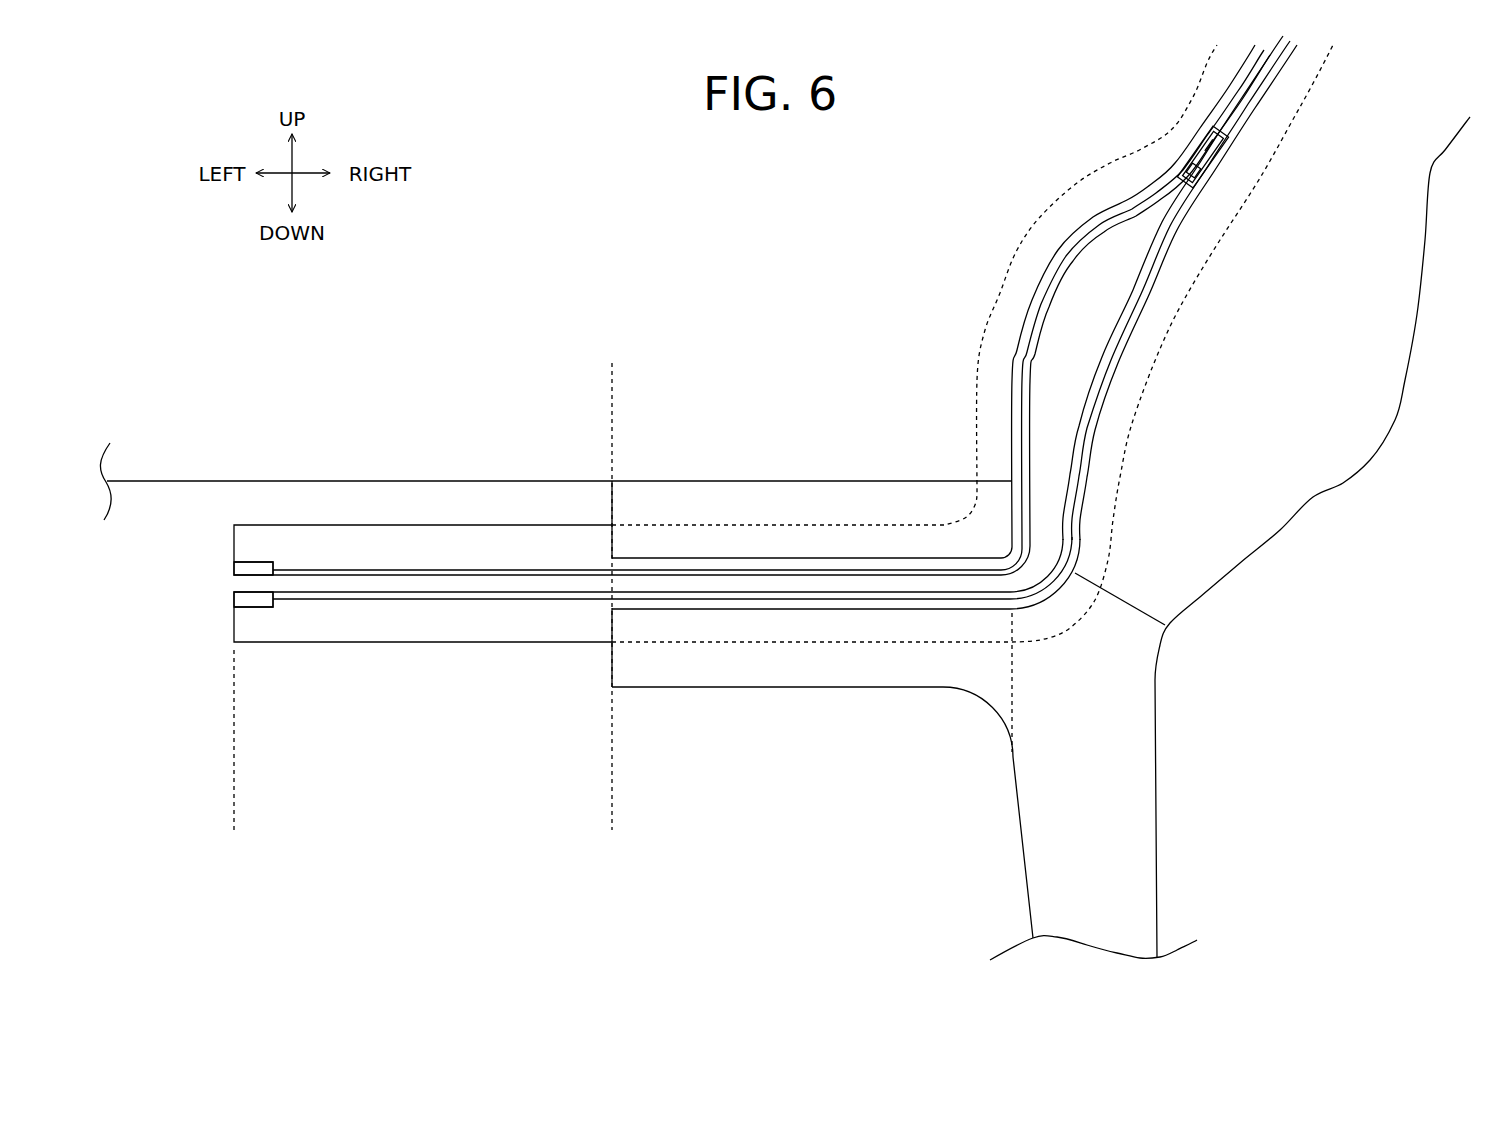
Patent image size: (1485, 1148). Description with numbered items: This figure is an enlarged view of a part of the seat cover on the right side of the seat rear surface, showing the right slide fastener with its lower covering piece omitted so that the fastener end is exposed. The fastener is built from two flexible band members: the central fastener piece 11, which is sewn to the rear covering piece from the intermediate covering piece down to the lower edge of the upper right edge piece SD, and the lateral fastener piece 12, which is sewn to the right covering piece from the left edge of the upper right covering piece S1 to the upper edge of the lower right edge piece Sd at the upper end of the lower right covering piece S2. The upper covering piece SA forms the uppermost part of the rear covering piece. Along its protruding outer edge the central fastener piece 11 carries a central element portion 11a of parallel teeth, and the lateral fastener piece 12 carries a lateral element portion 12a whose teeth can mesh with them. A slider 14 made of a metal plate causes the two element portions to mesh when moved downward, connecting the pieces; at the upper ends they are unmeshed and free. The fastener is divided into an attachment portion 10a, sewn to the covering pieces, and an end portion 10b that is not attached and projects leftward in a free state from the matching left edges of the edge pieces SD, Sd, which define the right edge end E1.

The attachment portion 10a is at (612, 383).
The end portion 10b is at (612, 820).
The central fastener piece 11 is at (450, 548).
The central element portion 11a is at (333, 570).
The lateral fastener piece 12 is at (457, 620).
The lateral element portion 12a is at (377, 597).
The slider 14 is at (1215, 162).
The right edge end E1 is at (612, 540).
The upper right edge piece SD is at (763, 543).
The lower right edge piece Sd is at (845, 663).
The upper covering piece SA is at (177, 432).
The upper right covering piece S1 is at (1185, 542).
The lower right covering piece S2 is at (1108, 760).